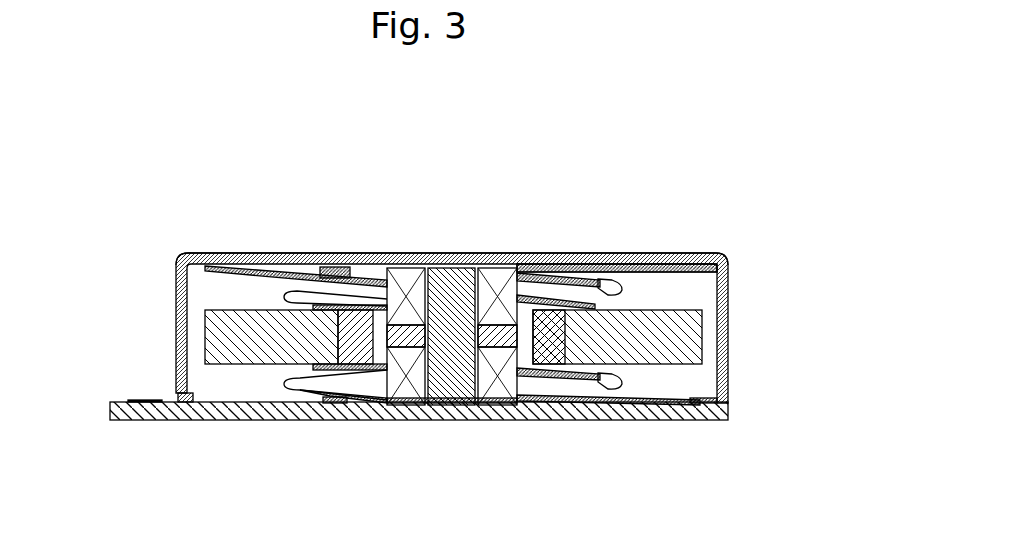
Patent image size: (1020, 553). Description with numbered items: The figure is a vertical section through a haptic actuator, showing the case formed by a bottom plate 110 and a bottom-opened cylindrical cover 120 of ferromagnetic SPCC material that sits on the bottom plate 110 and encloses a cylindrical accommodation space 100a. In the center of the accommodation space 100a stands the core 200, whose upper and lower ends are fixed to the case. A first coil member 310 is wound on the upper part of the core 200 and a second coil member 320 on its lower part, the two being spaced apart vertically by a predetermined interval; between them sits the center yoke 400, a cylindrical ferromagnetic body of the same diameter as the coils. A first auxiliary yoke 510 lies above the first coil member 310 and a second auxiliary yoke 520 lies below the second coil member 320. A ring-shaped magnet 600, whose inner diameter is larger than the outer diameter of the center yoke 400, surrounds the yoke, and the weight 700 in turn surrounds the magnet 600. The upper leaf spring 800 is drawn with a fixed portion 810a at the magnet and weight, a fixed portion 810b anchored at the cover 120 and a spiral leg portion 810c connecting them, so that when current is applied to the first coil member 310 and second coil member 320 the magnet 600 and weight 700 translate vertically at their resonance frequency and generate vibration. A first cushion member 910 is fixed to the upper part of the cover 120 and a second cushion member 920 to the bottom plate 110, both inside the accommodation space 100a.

The accommodation space 100a is at (212, 293).
The bottom plate 110 is at (212, 420).
The cover 120 is at (273, 253).
The core 200 is at (465, 407).
The first coil member 310 is at (403, 257).
The second coil member 320 is at (493, 257).
The center yoke 400 is at (497, 347).
The first auxiliary yoke 510 is at (515, 257).
The second auxiliary yoke 520 is at (412, 405).
The magnet 600 is at (560, 372).
The weight 700 is at (682, 364).
The elastic member 800 is at (673, 185).
The first elastic portion 810a is at (553, 257).
The second elastic portion 810b is at (685, 257).
The bent portion 810c is at (603, 270).
The first cushion member 910 is at (347, 260).
The second cushion member 920 is at (330, 420).